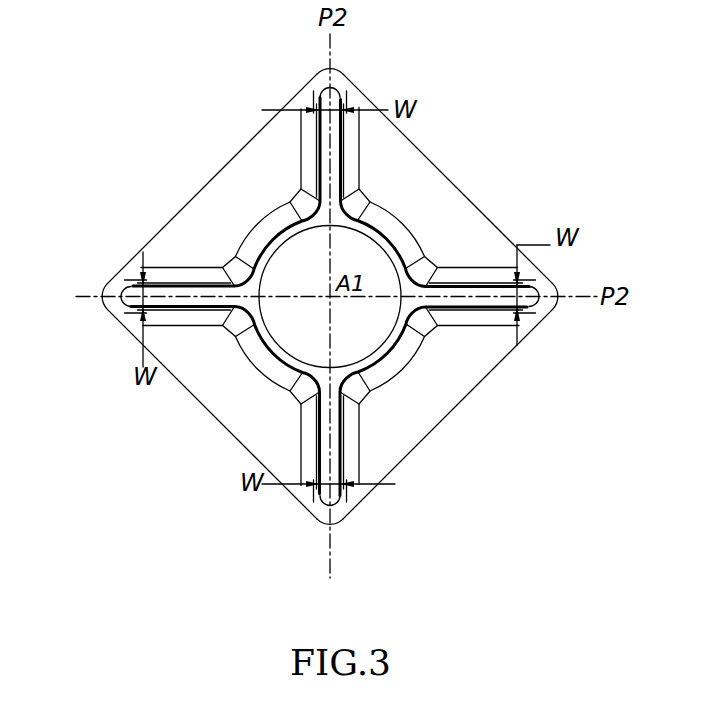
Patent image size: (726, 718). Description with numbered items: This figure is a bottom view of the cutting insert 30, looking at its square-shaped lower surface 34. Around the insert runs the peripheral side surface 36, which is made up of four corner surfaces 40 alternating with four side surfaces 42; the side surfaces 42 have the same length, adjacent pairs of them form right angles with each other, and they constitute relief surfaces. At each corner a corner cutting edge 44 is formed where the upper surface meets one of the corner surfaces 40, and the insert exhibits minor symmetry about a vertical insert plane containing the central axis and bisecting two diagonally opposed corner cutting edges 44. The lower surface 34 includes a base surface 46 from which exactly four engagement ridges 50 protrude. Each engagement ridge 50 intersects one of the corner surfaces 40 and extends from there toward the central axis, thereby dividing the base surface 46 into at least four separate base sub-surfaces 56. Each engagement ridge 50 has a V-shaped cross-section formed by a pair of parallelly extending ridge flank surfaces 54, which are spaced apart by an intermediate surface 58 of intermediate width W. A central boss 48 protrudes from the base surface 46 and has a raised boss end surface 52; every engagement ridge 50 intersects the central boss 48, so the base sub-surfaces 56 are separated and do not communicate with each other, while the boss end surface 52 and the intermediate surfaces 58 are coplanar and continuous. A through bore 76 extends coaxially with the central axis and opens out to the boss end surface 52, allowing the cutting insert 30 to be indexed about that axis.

The cutting insert 30 is at (484, 53).
The lower surface 34 is at (441, 219).
The peripheral side surface 36 is at (392, 463).
The corner surfaces 40 is at (350, 84).
The side surfaces 42 is at (273, 222).
The corner cutting edge 44 is at (348, 70).
The base surface 46 is at (394, 221).
The central boss 48 is at (388, 366).
The engagement ridges 50 is at (284, 262).
The boss end surface 52 is at (386, 351).
The ridge flank surfaces 54 is at (310, 136).
The base sub-surfaces 56 is at (197, 232).
The intermediate surface 58 is at (325, 84).
The through bore 76 is at (317, 177).